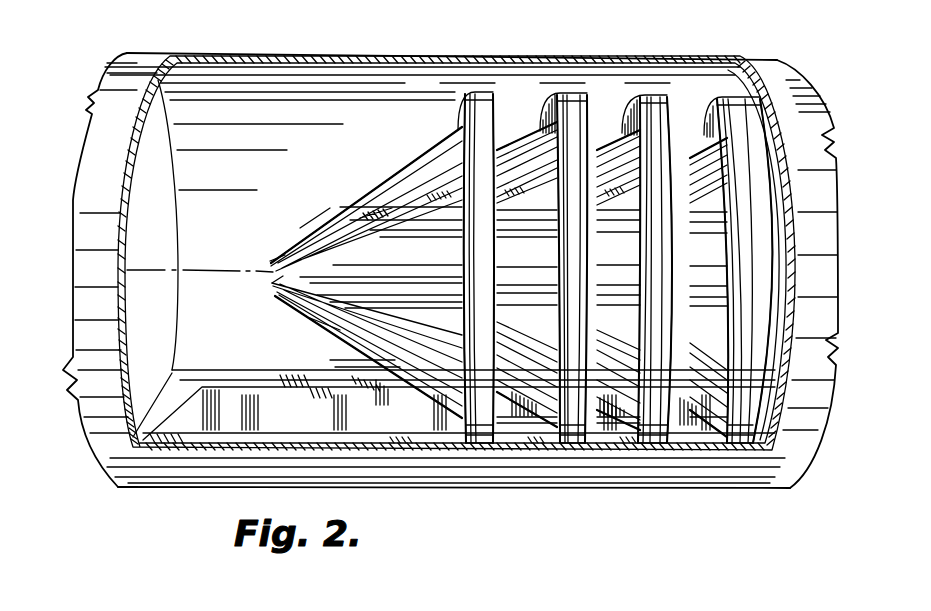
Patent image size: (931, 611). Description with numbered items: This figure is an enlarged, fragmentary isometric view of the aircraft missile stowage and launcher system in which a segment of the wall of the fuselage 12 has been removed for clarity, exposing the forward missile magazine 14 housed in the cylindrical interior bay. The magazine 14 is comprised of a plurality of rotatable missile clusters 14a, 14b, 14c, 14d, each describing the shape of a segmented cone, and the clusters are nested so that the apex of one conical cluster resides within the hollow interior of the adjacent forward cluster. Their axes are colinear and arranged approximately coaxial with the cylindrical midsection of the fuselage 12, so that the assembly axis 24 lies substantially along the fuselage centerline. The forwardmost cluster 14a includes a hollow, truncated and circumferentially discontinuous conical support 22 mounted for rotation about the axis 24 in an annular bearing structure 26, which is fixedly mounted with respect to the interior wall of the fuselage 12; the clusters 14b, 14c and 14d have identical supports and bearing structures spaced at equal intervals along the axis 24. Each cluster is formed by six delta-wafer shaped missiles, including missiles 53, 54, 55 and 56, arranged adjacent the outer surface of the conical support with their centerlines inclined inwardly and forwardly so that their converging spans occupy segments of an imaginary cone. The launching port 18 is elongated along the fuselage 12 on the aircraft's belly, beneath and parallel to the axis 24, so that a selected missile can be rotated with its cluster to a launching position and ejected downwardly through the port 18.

The fuselage 12 is at (150, 55).
The forward missile magazine 14 is at (472, 225).
The forwardmost missile cluster 14a is at (404, 150).
The missile cluster 14b is at (517, 129).
The missile cluster 14c is at (604, 131).
The missile cluster 14d is at (691, 111).
The forward launching port 18 is at (230, 428).
The conical support 22 is at (383, 210).
The axis 24 is at (220, 270).
The annular bearing structure 26 is at (458, 100).
The delta-wafer shaped missile 53 is at (270, 263).
The delta-wafer shaped missile 54 is at (310, 223).
The delta-wafer shaped missile 55 is at (273, 280).
The delta-wafer shaped missile 56 is at (323, 323).